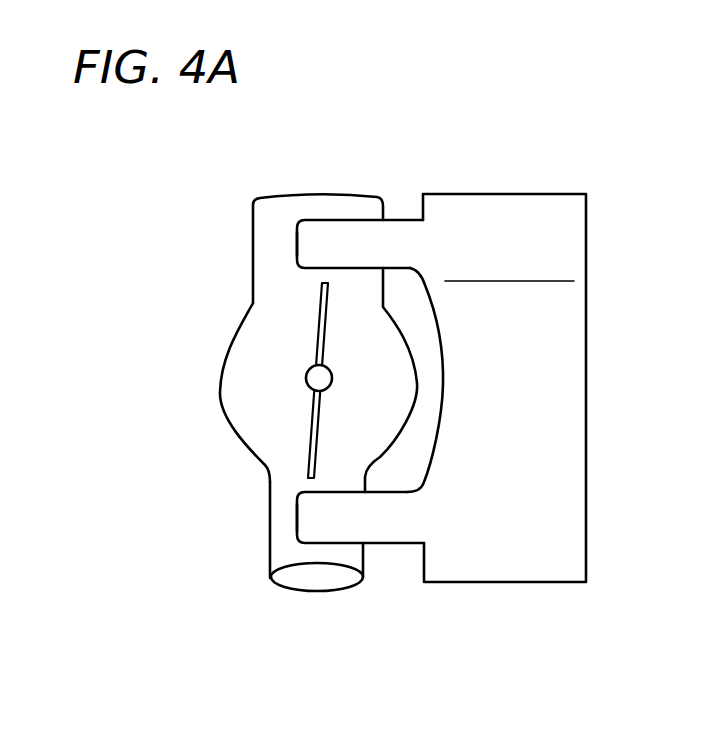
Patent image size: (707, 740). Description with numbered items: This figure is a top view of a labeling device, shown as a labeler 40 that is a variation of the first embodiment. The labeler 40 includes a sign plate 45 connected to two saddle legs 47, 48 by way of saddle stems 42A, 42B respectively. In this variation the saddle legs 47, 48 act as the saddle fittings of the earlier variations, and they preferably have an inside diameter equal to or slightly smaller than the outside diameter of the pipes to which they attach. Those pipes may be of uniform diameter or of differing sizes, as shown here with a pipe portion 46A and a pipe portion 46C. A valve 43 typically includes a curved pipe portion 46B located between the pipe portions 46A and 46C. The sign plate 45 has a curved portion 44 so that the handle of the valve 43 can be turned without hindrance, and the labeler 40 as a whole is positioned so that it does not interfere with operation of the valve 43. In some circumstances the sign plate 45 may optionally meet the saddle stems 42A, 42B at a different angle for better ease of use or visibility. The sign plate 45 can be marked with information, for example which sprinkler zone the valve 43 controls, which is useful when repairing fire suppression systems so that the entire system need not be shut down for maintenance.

The labeler 40 is at (527, 108).
The saddle stem 42A is at (402, 212).
The saddle stem 42B is at (392, 547).
The valve 43 is at (307, 372).
The curved portion 44 is at (428, 467).
The sign plate 45 is at (579, 211).
The pipe portion 46A is at (313, 196).
The curved pipe portion 46B is at (408, 425).
The pipe portion 46C is at (315, 591).
The saddle leg 47 is at (305, 241).
The saddle leg 48 is at (318, 527).